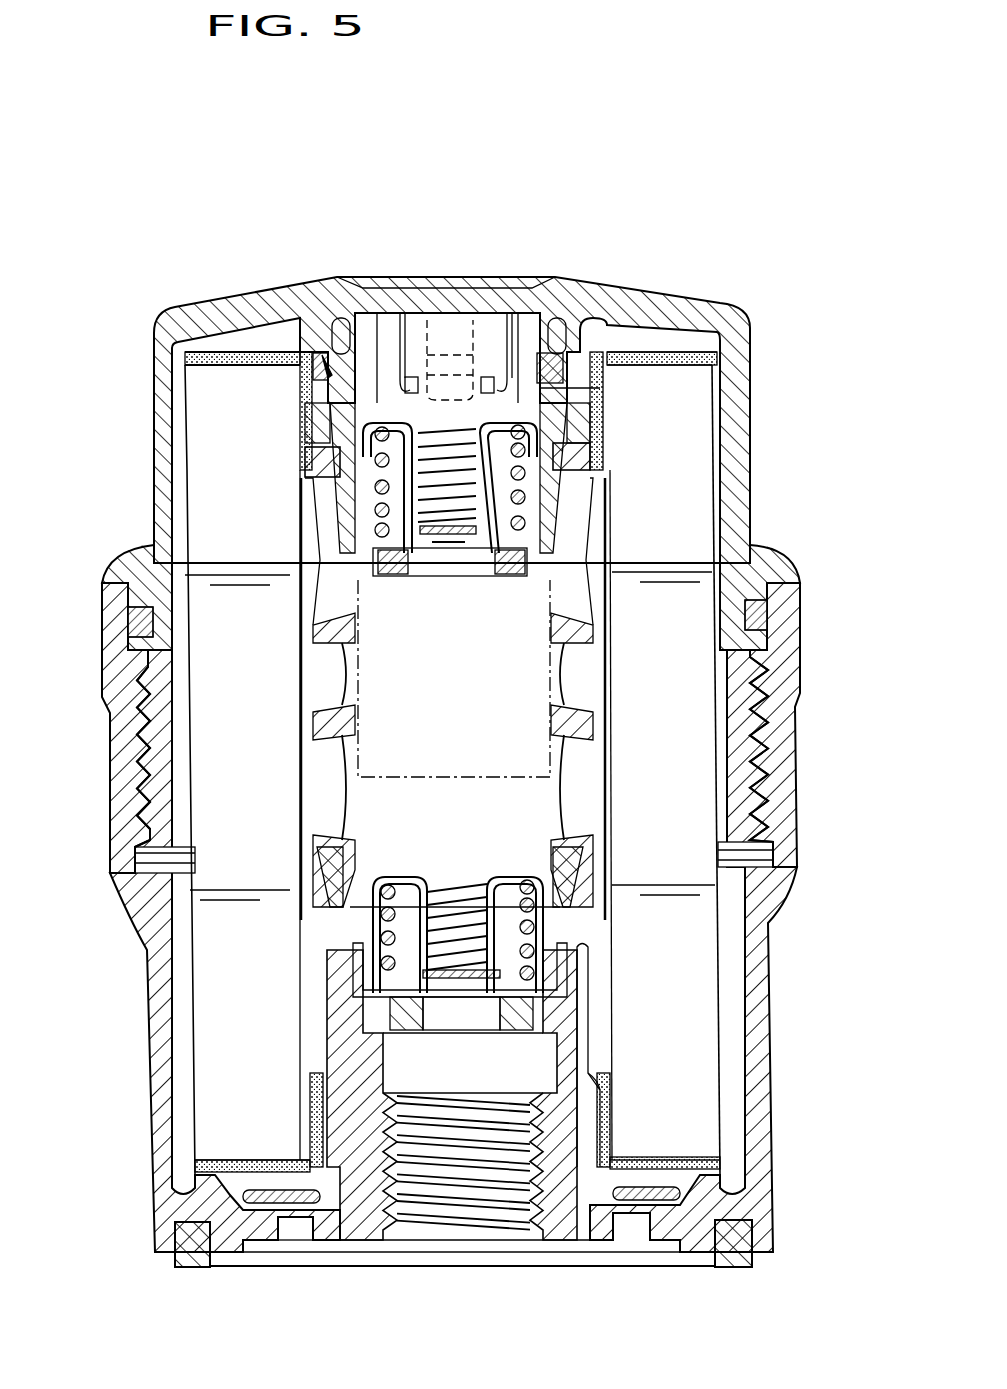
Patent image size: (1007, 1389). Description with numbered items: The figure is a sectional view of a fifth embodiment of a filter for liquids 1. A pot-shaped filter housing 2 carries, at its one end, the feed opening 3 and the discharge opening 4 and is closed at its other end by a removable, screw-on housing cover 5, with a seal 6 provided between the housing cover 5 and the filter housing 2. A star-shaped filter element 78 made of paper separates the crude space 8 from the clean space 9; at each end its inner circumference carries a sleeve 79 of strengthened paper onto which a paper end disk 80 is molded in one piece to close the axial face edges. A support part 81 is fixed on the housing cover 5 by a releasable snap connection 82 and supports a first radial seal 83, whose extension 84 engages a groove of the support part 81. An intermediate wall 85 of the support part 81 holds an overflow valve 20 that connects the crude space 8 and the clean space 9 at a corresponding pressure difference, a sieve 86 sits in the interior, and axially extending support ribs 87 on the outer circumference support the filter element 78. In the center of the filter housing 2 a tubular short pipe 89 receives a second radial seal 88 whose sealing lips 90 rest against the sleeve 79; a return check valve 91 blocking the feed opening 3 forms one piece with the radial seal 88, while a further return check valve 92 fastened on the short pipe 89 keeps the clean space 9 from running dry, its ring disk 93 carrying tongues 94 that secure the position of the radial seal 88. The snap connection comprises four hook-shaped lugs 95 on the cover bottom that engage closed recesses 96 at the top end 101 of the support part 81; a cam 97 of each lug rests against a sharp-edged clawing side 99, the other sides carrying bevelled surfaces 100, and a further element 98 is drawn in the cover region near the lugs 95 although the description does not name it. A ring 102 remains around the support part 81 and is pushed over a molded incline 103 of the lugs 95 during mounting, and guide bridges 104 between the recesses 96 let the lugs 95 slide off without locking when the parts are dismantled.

The filter for liquids 1 is at (140, 1110).
The filter housing 2 is at (190, 1207).
The feed opening 3 is at (298, 1235).
The discharge opening 4 is at (460, 1182).
The housing cover 5 is at (262, 318).
The seal 6 is at (128, 620).
The crude space 8 is at (183, 1068).
The clean space 9 is at (318, 1016).
The overflow valve 20 is at (505, 568).
The filter element 78 is at (205, 938).
The sleeve 79 is at (612, 300).
The end disk 80 is at (655, 300).
The support part 81 is at (560, 645).
The snap connection 82 is at (290, 340).
The first radial seal 83 is at (305, 460).
The extension 84 is at (583, 455).
The intermediate wall 85 is at (368, 540).
The sieve 86 is at (483, 780).
The support ribs 87 is at (580, 695).
The second radial seal 88 is at (330, 1207).
The short pipe 89 is at (352, 1048).
The sealing lips 90 is at (612, 1140).
The return check valve 91 is at (633, 1203).
The return check valve 92 is at (560, 920).
The ring disk 93 is at (357, 975).
The tongues 94 is at (590, 1003).
The hook-shaped lugs 95 is at (370, 277).
The recesses 96 is at (488, 298).
The cam 97 is at (545, 383).
The terminal block 98 is at (563, 298).
The clawing side 99 is at (418, 300).
The bevelled surfaces 100 is at (402, 300).
The top end 101 is at (580, 405).
The ring 102 is at (333, 300).
The molded incline 103 is at (305, 405).
The guide bridges 104 is at (518, 300).